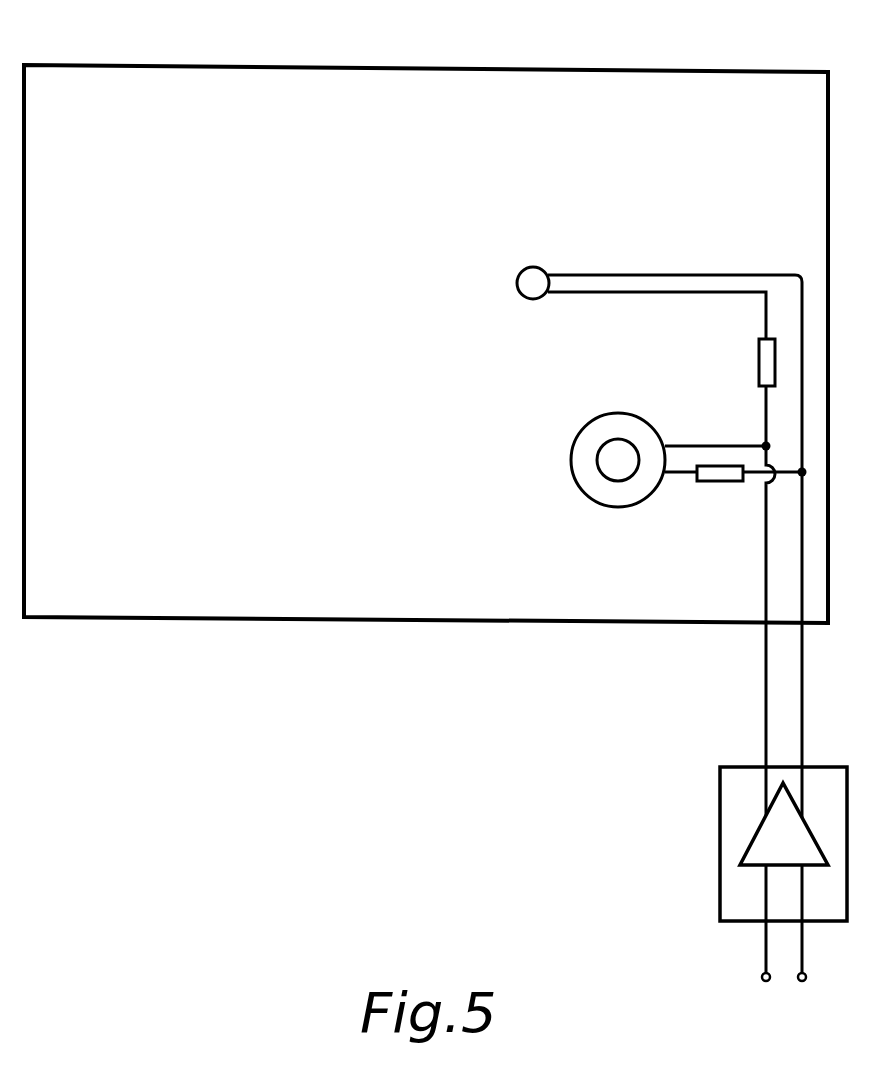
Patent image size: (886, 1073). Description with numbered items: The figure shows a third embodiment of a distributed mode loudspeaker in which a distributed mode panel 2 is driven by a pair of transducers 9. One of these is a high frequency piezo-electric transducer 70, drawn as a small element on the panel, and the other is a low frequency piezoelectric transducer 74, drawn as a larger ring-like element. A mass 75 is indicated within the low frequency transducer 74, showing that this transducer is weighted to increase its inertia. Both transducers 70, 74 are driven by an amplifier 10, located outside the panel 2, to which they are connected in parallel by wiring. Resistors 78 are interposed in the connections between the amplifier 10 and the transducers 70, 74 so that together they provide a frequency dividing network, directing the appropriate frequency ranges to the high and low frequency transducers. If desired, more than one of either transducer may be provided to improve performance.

The distributed mode panel 2 is at (116, 78).
The transducers 9 is at (478, 280).
The amplifier 10 is at (737, 812).
The high frequency piezo-electric transducer 70 is at (533, 280).
The low frequency piezoelectric transducer 74 is at (597, 490).
The mass 75 is at (621, 468).
The resistors 78 is at (727, 468).